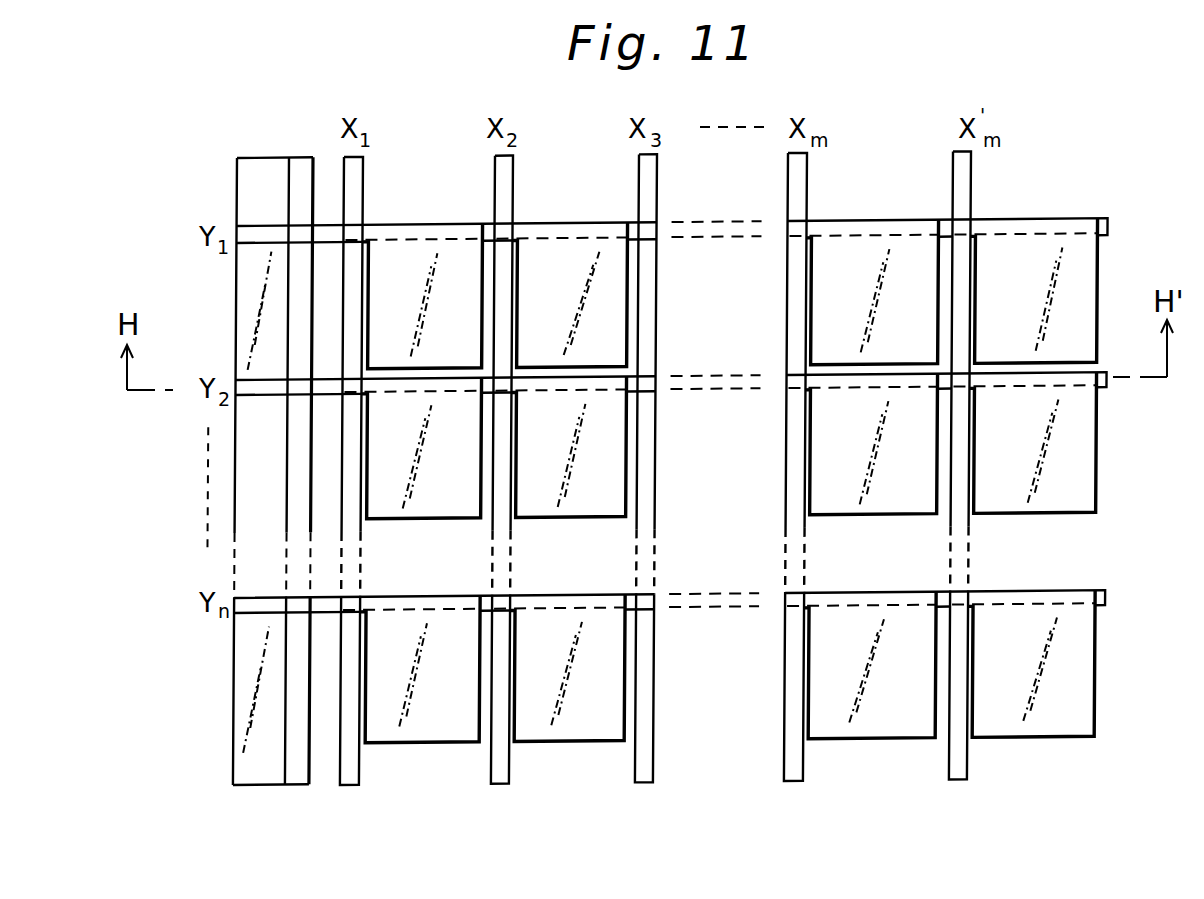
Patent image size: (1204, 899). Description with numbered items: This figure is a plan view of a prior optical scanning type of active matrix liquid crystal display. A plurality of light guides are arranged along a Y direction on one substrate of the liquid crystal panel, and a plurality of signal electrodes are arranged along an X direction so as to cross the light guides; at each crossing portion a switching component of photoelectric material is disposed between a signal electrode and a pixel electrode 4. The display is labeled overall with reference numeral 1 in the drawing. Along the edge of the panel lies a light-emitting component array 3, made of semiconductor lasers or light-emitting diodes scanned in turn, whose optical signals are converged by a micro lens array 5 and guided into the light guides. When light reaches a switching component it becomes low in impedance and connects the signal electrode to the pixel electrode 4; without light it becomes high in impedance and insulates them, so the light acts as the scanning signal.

The active matrix display panel 1 is at (350, 390).
The light-emitting component array 3 is at (258, 767).
The pixel electrode 4 is at (435, 502).
The micro lens array 5 is at (301, 768).